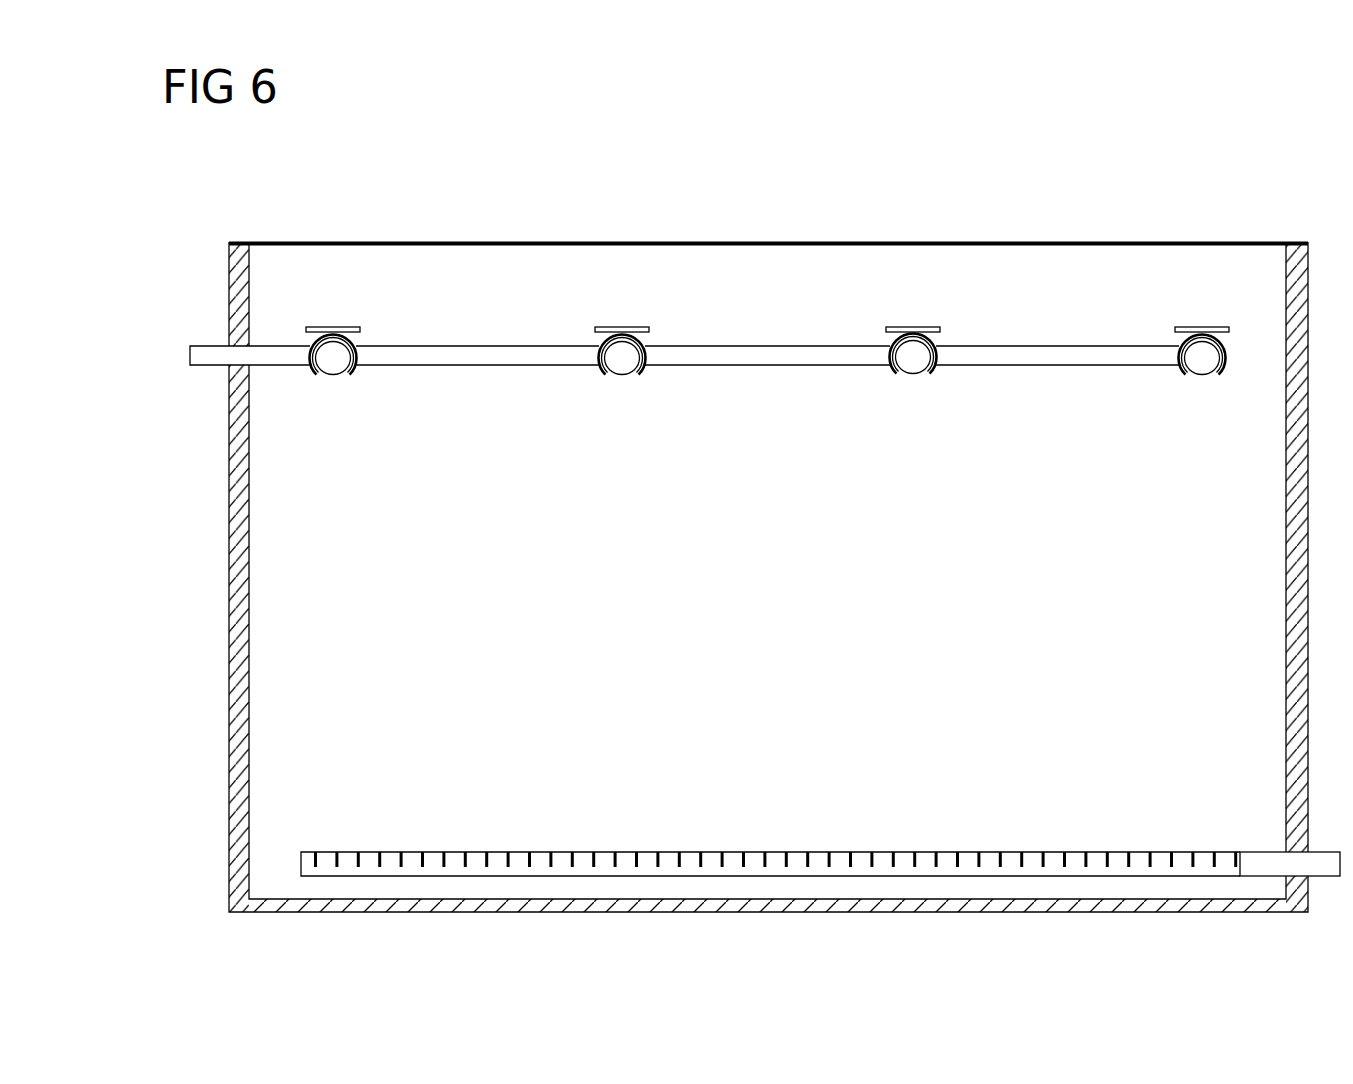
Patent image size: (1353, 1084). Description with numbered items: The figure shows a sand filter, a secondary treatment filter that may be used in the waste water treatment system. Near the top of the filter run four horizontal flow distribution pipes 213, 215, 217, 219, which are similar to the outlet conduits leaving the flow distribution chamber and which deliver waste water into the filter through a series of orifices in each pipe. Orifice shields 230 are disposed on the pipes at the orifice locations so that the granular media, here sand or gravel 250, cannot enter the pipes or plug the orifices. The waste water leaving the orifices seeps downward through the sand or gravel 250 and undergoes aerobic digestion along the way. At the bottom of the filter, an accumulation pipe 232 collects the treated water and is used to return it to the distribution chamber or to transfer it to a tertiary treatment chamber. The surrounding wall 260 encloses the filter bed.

The horizontal flow distribution pipe 213 is at (330, 362).
The horizontal flow distribution pipe 215 is at (620, 358).
The horizontal flow distribution pipe 217 is at (913, 360).
The horizontal flow distribution pipe 219 is at (1198, 362).
The orifice shield 230 is at (338, 327).
The accumulation pipe 232 is at (1098, 858).
The sand or gravel 250 is at (311, 607).
The housing wall 260 is at (239, 427).